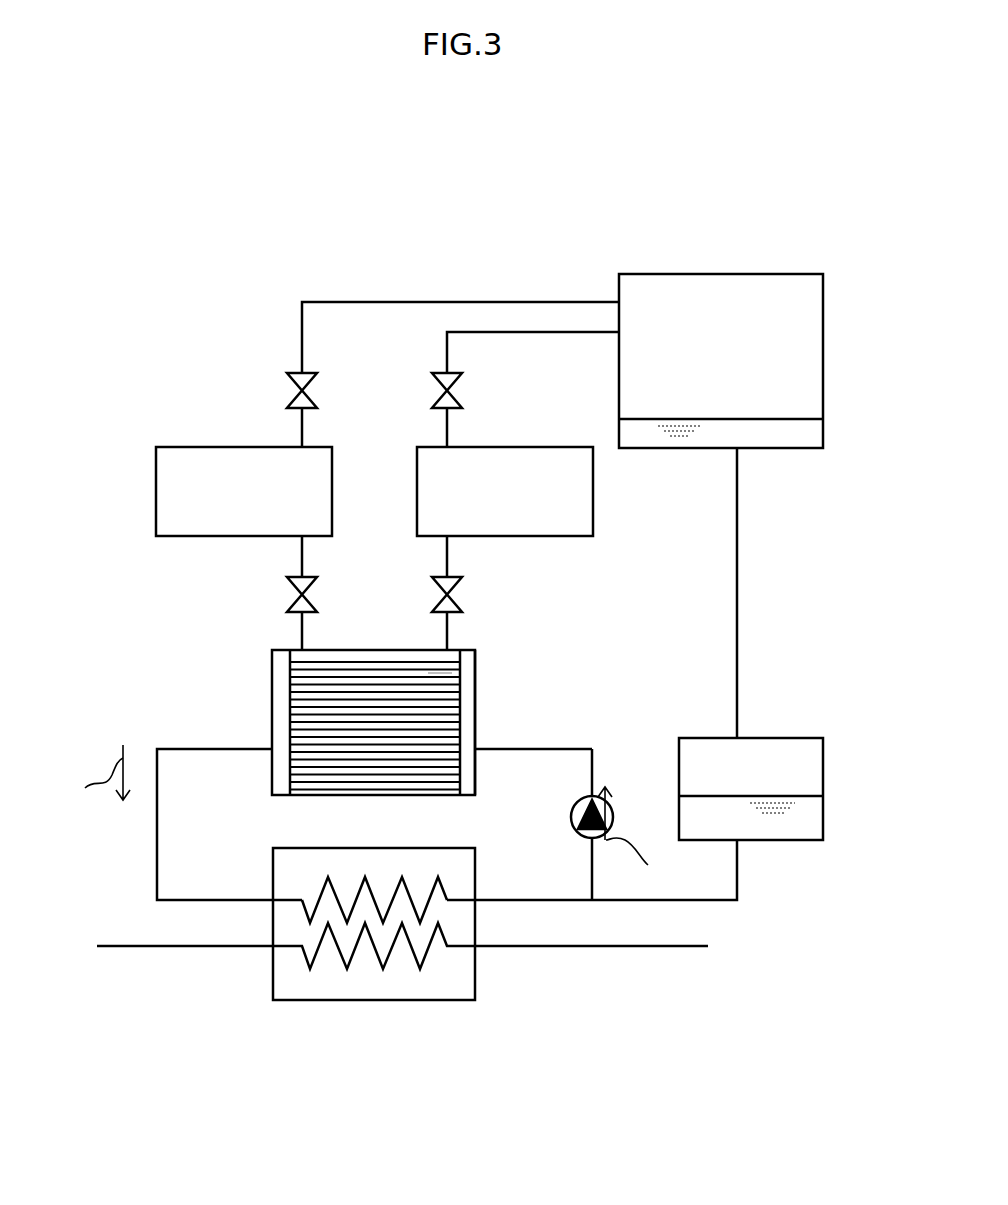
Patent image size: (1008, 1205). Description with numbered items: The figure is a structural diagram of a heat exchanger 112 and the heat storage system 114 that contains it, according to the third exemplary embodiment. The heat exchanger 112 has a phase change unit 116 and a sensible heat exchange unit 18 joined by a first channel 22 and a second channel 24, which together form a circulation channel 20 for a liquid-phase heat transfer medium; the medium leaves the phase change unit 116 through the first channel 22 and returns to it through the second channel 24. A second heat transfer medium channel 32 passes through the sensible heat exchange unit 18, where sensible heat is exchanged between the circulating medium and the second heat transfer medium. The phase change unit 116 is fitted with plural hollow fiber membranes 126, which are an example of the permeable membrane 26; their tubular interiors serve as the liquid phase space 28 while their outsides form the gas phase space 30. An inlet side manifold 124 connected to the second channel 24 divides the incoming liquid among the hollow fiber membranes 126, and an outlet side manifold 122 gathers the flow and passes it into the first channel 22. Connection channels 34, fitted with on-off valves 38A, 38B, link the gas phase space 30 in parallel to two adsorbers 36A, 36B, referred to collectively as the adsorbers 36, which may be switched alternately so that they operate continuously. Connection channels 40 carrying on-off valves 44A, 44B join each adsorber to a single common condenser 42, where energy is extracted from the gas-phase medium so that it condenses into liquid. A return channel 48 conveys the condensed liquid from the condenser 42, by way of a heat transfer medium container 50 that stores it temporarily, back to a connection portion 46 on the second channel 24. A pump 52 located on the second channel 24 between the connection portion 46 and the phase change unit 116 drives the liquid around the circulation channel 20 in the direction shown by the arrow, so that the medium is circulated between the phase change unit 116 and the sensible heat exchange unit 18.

The sensible heat exchange unit 18 is at (313, 1010).
The circulation channel 20 is at (349, 771).
The first channel 22 is at (155, 702).
The second channel 24 is at (590, 710).
The heat exchange core 26 is at (308, 740).
The liquid phase space 28 is at (473, 765).
The gas phase space 30 is at (432, 673).
The second heat transfer medium channel 32 is at (588, 950).
The connection channels 34 is at (442, 557).
The adsorbers 36 is at (375, 494).
The adsorber 36A is at (196, 436).
The adsorber 36B is at (648, 575).
The on-off valve 38A is at (287, 589).
The on-off valve 38B is at (461, 601).
The connection channels 40 is at (445, 345).
The condenser 42 is at (619, 273).
The on-off valve 44A is at (290, 375).
The on-off valve 44B is at (461, 388).
The connection portion 46 is at (597, 903).
The return channel 48 is at (740, 583).
The heat transfer medium container 50 is at (752, 843).
The pump 52 is at (570, 807).
The heat exchanger 112 is at (158, 1030).
The heat storage system 114 is at (707, 152).
The phase change unit 116 is at (270, 670).
The outlet side manifold 122 is at (290, 661).
The inlet side manifold 124 is at (461, 790).
The hollow fiber membranes 126 is at (358, 782).